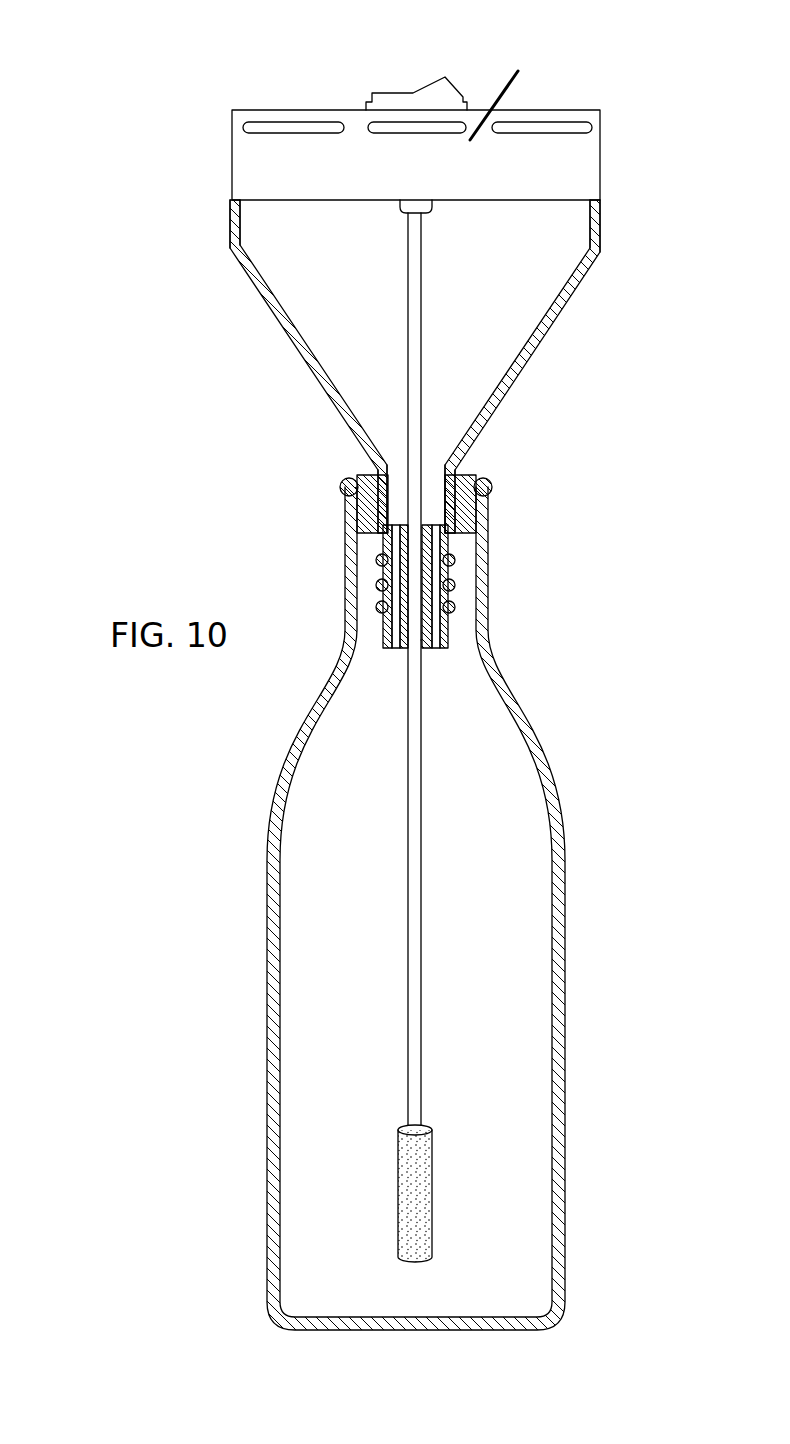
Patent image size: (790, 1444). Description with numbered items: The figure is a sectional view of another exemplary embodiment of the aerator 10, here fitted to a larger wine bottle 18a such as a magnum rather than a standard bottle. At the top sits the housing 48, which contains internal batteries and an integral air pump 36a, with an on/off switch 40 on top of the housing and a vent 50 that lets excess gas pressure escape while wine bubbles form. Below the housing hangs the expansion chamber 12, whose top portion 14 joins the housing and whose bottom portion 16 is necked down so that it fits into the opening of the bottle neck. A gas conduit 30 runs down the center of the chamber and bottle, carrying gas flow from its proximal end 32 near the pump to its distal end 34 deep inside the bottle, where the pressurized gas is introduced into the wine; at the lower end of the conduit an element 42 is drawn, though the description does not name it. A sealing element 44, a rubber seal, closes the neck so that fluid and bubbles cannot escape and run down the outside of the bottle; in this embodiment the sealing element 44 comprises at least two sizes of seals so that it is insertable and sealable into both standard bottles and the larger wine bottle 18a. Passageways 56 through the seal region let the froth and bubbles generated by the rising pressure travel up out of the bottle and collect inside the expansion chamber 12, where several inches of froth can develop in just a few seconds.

The aerator 10 is at (103, 68).
The expansion chamber 12 is at (257, 292).
The top portion 14 is at (233, 228).
The bottom portion 16 is at (374, 446).
The larger wine bottle 18a is at (555, 785).
The gas conduit 30 is at (415, 960).
The proximal end 32 is at (415, 255).
The distal end 34 is at (423, 1118).
The air pump 36a is at (518, 71).
The on/off switch 40 is at (400, 92).
The pellet 42 is at (420, 1225).
The sealing element 44 is at (445, 632).
The housing 48 is at (602, 177).
The vent 50 is at (582, 129).
The passageways 56 is at (445, 650).